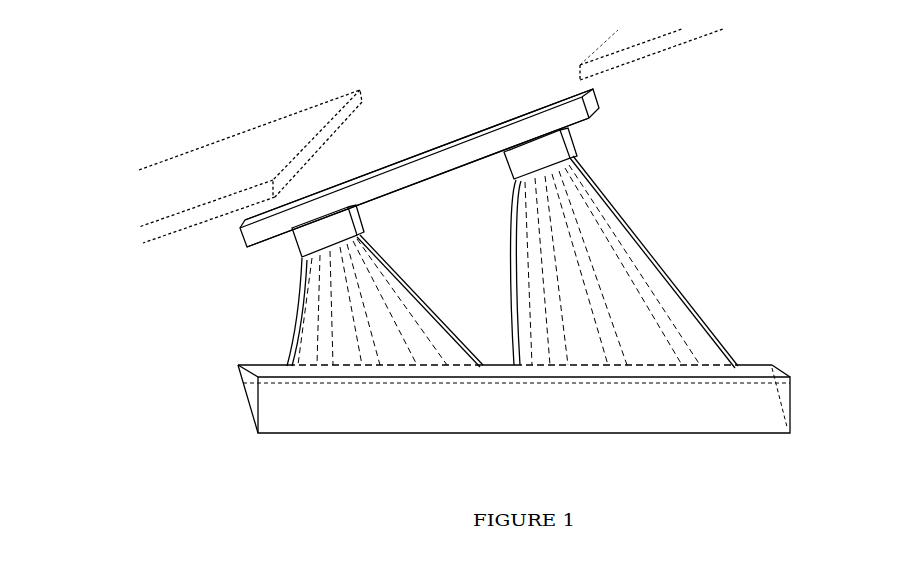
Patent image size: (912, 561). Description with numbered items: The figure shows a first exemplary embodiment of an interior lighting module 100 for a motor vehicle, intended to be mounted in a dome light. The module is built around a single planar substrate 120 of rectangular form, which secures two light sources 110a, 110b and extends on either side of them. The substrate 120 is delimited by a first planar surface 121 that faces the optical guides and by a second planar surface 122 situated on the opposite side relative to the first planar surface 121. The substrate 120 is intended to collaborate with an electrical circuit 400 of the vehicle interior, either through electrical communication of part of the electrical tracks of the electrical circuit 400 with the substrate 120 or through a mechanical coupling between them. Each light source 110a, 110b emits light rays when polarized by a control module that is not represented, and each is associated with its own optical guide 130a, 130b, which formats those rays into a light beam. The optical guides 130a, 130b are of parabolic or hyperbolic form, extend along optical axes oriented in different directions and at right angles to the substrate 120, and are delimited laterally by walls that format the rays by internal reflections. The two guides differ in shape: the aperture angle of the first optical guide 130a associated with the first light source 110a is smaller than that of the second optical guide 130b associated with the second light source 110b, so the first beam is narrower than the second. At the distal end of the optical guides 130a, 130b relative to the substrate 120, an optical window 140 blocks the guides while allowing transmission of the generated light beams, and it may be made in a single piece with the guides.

The interior lighting module 100 is at (723, 200).
The first light source 110a is at (566, 137).
The second light source 110b is at (292, 246).
The substrate 120 is at (419, 152).
The first planar surface 121 is at (433, 178).
The second planar surface 122 is at (357, 178).
The first optical guide 130a is at (693, 313).
The second optical guide 130b is at (290, 331).
The optical window 140 is at (790, 397).
The electrical circuit 400 is at (220, 158).